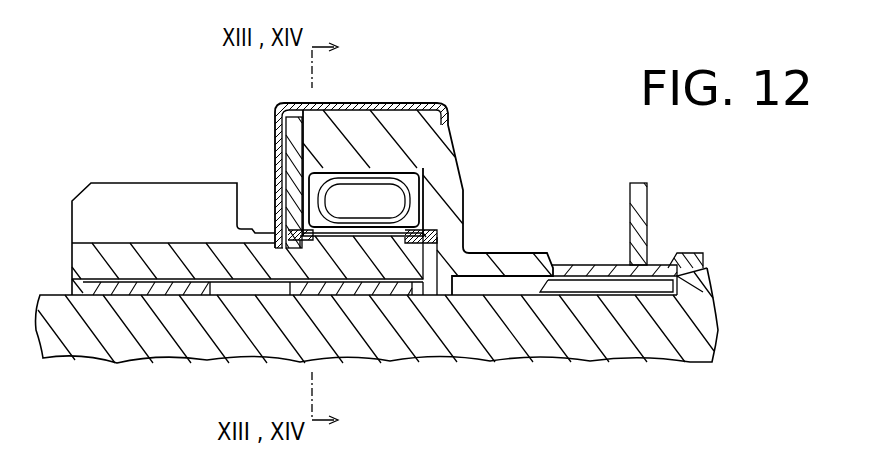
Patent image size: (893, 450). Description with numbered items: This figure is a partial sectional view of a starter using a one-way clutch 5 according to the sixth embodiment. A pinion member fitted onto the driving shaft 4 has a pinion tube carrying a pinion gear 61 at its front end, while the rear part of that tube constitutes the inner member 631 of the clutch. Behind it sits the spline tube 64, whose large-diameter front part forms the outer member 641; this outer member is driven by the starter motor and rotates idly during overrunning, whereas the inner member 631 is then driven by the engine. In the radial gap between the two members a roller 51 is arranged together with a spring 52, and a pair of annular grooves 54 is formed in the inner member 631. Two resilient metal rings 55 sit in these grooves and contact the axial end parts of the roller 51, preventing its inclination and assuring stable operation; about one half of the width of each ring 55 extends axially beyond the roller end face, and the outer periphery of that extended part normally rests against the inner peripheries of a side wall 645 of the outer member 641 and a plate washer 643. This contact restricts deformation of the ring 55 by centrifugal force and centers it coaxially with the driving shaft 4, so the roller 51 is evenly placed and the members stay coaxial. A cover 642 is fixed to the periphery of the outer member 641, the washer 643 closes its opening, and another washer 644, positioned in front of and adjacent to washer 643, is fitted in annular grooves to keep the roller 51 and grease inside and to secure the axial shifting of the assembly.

The driving shaft 4 is at (88, 343).
The one-way clutch 5 is at (368, 212).
The roller 51 is at (448, 133).
The spring 52 is at (363, 187).
The annular groove 54 is at (447, 233).
The ring 55 is at (302, 240).
The pinion gear 61 is at (105, 197).
The spline tube 64 is at (592, 270).
The inner member 631 is at (373, 263).
The outer member 641 is at (415, 127).
The cover 642 is at (350, 103).
The washer 643 is at (277, 125).
The washer 644 is at (277, 177).
The side wall 645 is at (448, 187).